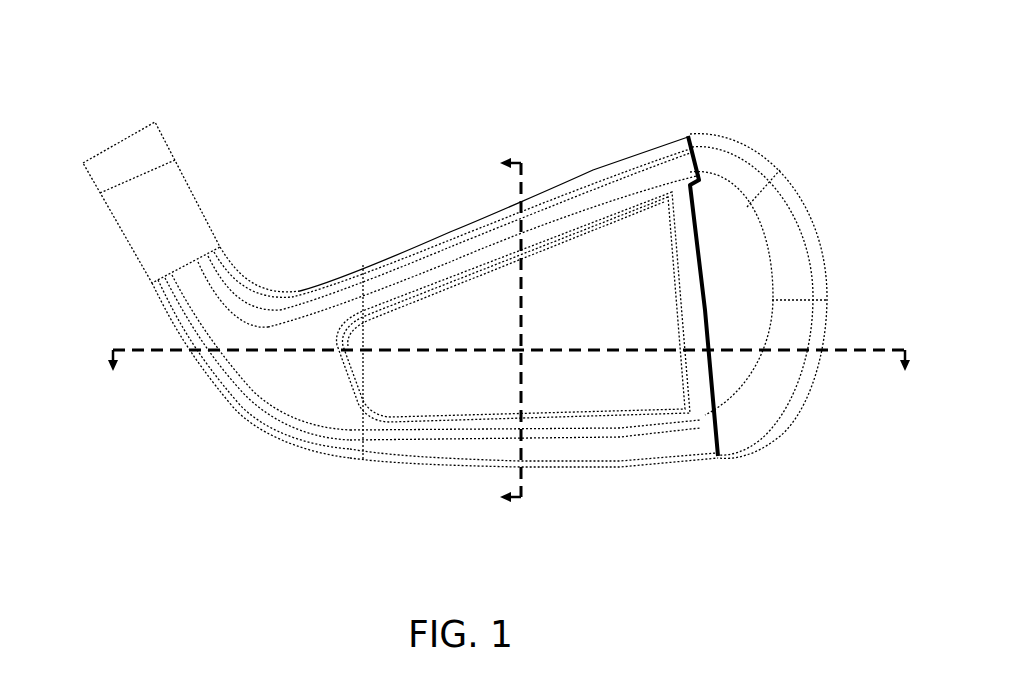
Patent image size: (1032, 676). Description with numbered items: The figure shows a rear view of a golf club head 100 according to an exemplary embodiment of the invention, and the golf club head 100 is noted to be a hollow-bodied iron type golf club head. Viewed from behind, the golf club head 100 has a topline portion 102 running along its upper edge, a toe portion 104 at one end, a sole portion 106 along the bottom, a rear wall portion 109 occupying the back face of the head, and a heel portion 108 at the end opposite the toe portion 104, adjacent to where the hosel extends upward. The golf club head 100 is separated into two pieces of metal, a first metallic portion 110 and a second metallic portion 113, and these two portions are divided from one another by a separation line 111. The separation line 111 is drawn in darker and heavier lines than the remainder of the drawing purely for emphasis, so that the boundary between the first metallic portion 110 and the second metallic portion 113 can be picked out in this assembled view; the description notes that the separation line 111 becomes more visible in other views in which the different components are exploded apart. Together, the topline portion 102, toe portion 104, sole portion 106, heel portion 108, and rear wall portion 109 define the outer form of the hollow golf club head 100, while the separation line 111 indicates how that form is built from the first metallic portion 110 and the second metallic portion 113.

The golf club head 100 is at (47, 44).
The topline portion 102 is at (593, 170).
The toe portion 104 is at (822, 258).
The sole portion 106 is at (415, 462).
The heel portion 108 is at (233, 408).
The rear wall portion 109 is at (635, 395).
The first metallic portion 110 is at (311, 203).
The separation line 111 is at (692, 122).
The second metallic portion 113 is at (786, 143).